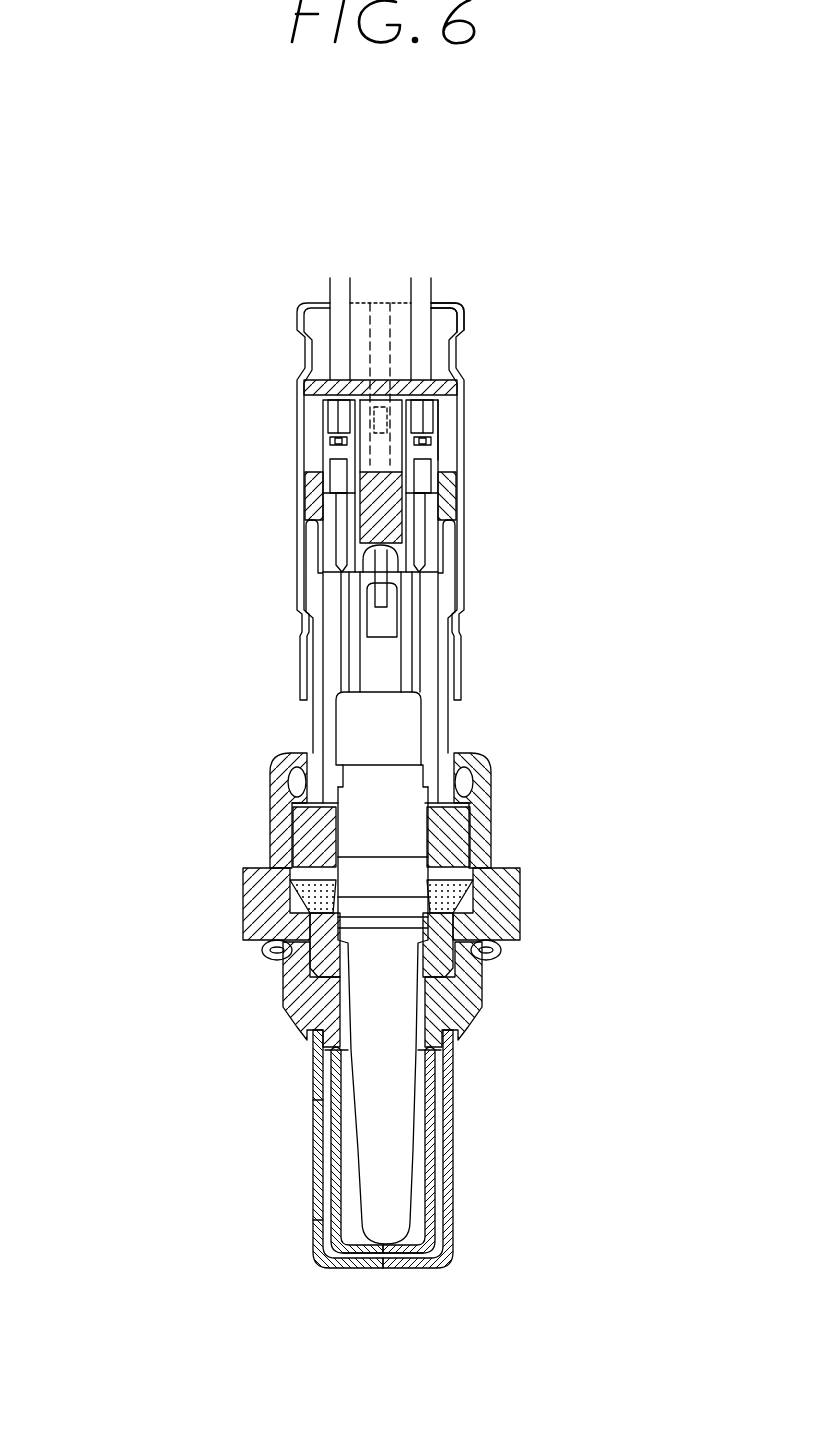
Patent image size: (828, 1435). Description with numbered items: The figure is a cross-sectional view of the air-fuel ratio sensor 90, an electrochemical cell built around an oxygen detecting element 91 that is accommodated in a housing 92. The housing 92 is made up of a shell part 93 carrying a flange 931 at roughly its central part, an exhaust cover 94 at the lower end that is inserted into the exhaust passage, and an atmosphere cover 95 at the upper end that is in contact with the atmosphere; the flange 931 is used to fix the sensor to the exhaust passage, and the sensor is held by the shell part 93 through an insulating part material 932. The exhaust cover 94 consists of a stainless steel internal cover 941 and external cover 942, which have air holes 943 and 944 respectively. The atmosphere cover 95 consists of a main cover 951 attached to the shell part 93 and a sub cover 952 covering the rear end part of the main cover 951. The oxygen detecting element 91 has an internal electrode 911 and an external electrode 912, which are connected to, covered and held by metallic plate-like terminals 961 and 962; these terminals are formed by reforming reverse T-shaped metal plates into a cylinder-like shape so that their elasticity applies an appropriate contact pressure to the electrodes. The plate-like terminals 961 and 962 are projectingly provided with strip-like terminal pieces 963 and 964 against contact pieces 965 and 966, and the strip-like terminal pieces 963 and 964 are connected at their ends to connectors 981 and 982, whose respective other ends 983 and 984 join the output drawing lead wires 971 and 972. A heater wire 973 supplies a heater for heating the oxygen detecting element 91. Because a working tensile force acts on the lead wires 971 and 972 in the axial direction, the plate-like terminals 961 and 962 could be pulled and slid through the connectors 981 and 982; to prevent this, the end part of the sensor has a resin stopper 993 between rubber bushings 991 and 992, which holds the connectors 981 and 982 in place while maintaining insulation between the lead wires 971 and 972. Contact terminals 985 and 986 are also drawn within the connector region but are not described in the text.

The air-fuel ratio sensor 90 is at (390, 231).
The oxygen detecting element 91 is at (424, 1133).
The internal electrode 911 is at (425, 728).
The external electrode 912 is at (300, 832).
The housing 92 is at (499, 852).
The shell part 93 is at (270, 798).
The flange 931 is at (513, 900).
The insulating part material 932 is at (308, 966).
The exhaust cover 94 is at (304, 1197).
The internal cover 941 is at (435, 1232).
The external cover 942 is at (453, 1185).
The air holes 943 is at (313, 1130).
The air holes 944 is at (432, 1088).
The atmosphere cover 95 is at (470, 566).
The main cover 951 is at (303, 712).
The sub cover 952 is at (288, 557).
The plate-like terminal 961 is at (348, 728).
The plate-like terminal 962 is at (403, 815).
The strip-like terminal piece 963 is at (343, 600).
The strip-like terminal piece 964 is at (418, 630).
The contact piece 965 is at (338, 512).
The contact piece 966 is at (452, 530).
The output drawing lead wire 971 is at (335, 322).
The output drawing lead wire 972 is at (418, 318).
The heater wire 973 is at (382, 282).
The connector 981 is at (323, 418).
The connector 982 is at (447, 442).
The connector other end 983 is at (375, 378).
The connector other end 984 is at (436, 410).
The contact terminal 985 is at (335, 480).
The contact terminal 986 is at (452, 493).
The rubber bushing 991 is at (455, 323).
The rubber bushing 992 is at (447, 427).
The stopper 993 is at (298, 334).